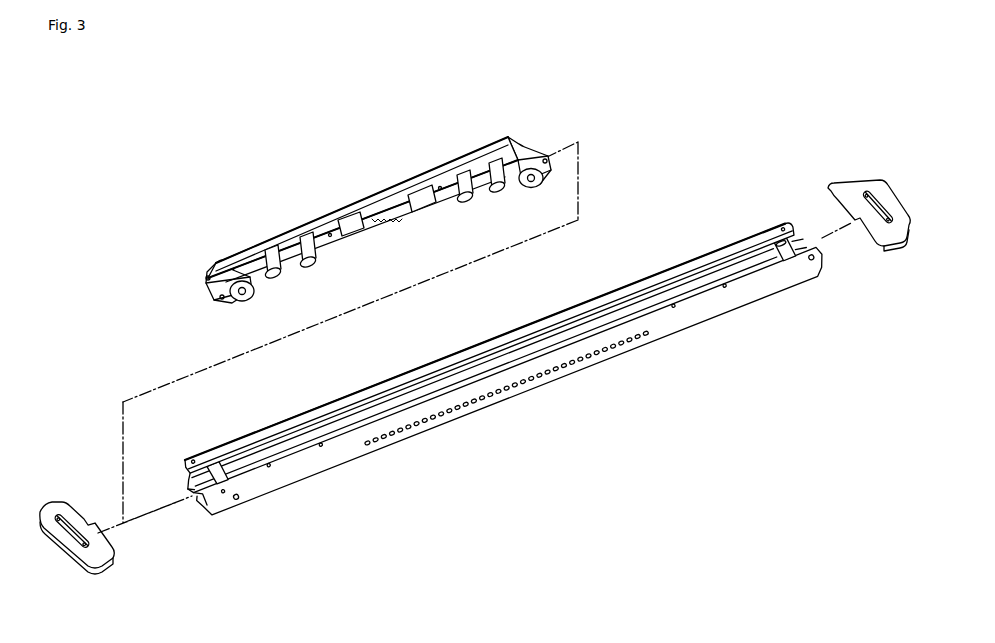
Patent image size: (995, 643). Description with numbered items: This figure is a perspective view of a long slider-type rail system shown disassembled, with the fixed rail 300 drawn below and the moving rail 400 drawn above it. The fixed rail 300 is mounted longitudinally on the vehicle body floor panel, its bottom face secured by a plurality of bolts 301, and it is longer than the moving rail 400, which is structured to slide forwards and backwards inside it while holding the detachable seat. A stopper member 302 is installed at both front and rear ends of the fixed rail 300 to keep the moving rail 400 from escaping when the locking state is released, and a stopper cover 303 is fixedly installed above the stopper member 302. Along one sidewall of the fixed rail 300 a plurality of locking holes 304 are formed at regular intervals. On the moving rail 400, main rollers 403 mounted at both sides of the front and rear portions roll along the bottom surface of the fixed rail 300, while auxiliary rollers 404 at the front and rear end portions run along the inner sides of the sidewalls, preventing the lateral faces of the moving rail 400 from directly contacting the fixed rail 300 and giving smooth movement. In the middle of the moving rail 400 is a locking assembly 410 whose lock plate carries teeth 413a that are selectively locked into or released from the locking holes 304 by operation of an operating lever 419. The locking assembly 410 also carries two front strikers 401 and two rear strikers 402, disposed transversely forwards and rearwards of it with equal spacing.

The fixed rail 300 is at (691, 253).
The bolts 301 is at (320, 446).
The stopper member 302 is at (226, 462).
The stopper cover 303 is at (65, 505).
The locking holes 304 is at (427, 427).
The moving rail 400 is at (490, 152).
The front strikers 401 is at (282, 232).
The rear strikers 402 is at (464, 163).
The main rollers 403 is at (246, 302).
The auxiliary rollers 404 is at (222, 301).
The locking assembly 410 is at (373, 213).
The teeth 413a is at (350, 311).
The operating lever 419 is at (345, 231).